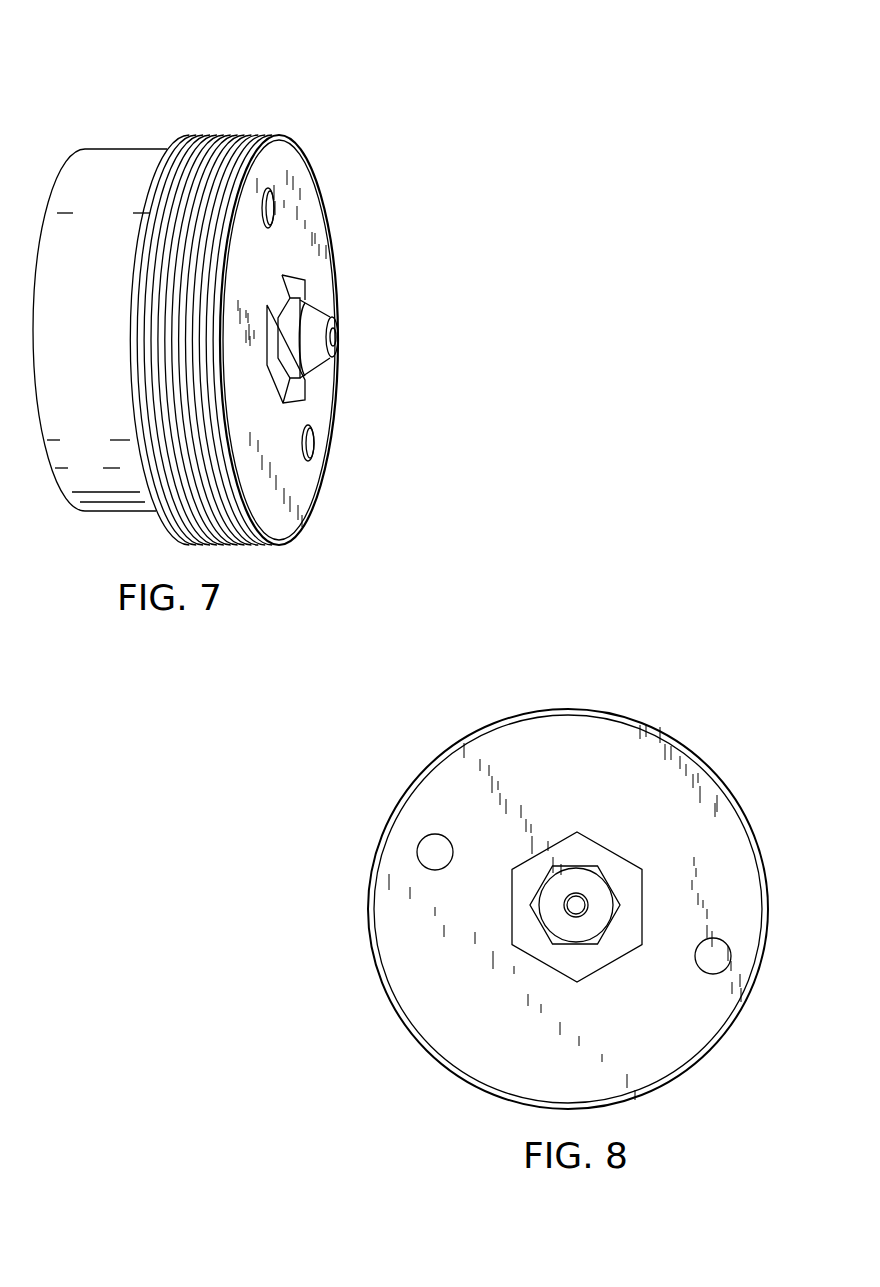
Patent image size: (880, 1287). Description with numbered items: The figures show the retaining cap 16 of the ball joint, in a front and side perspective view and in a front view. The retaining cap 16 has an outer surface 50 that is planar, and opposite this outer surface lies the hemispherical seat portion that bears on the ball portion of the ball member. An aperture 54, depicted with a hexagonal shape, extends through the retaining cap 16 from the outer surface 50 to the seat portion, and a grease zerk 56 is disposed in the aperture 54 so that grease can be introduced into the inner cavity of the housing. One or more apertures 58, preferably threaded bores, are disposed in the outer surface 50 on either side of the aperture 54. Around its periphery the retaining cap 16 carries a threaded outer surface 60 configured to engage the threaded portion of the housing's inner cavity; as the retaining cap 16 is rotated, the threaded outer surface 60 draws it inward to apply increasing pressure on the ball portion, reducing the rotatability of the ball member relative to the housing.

In FIG. 7, the retaining cap 16 is at (184, 116).
In FIG. 8, the retaining cap 16 is at (548, 697).
In FIG. 7, the outer surface 50 is at (318, 263).
In FIG. 8, the outer surface 50 is at (708, 831).
In FIG. 7, the aperture 54 is at (305, 378).
In FIG. 8, the aperture 54 is at (618, 942).
In FIG. 7, the grease zerk 56 is at (337, 322).
In FIG. 8, the grease zerk 56 is at (582, 905).
In FIG. 7, the apertures 58 is at (277, 207).
In FIG. 8, the apertures 58 is at (417, 850).
In FIG. 7, the threaded outer surface 60 is at (240, 134).